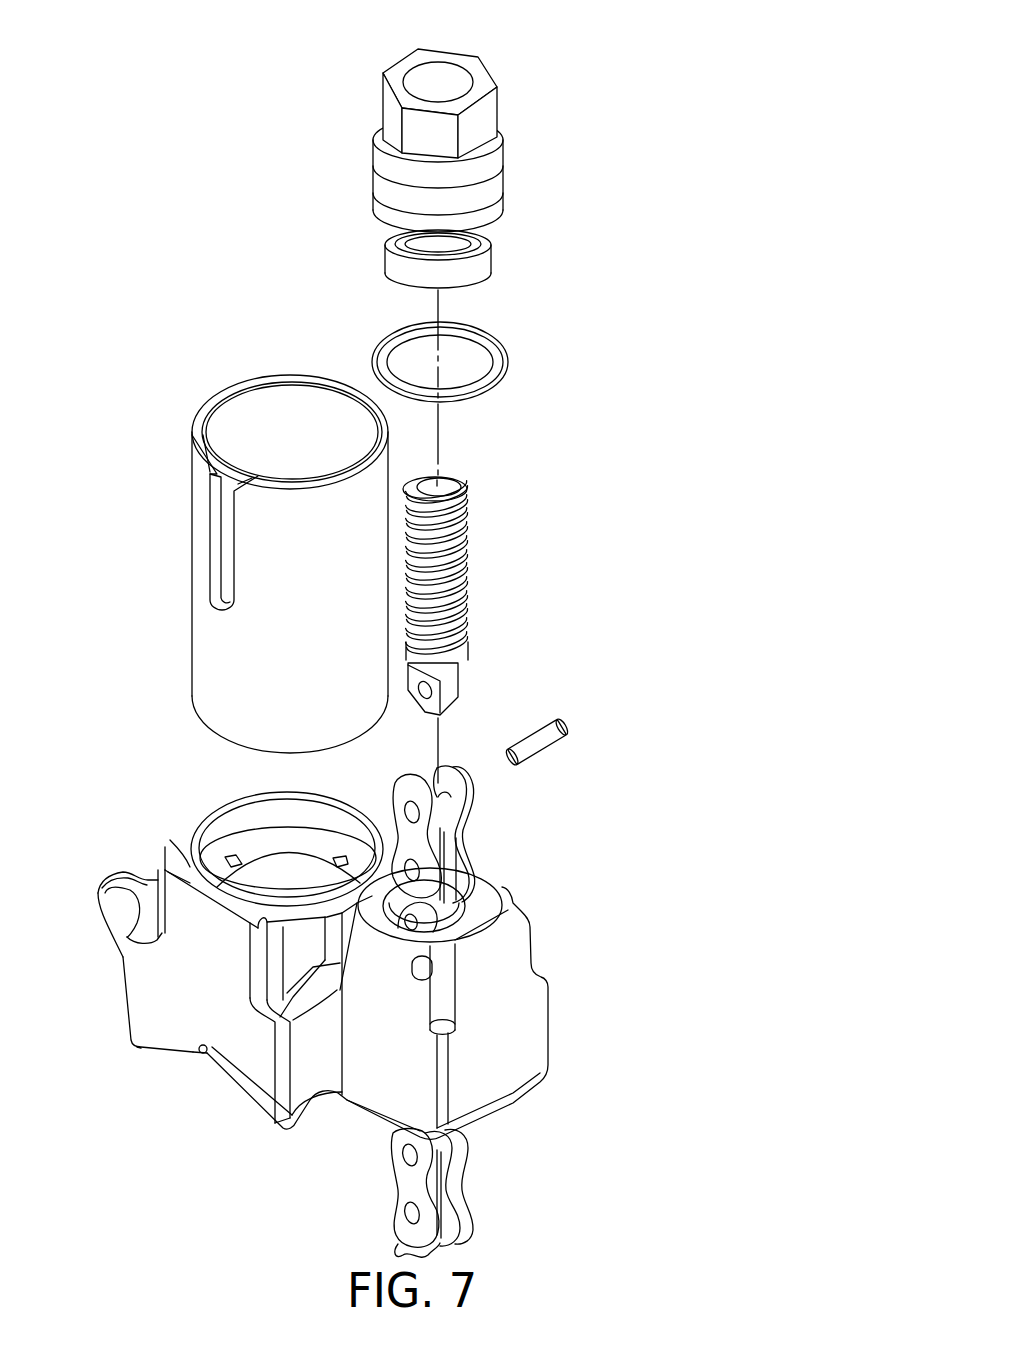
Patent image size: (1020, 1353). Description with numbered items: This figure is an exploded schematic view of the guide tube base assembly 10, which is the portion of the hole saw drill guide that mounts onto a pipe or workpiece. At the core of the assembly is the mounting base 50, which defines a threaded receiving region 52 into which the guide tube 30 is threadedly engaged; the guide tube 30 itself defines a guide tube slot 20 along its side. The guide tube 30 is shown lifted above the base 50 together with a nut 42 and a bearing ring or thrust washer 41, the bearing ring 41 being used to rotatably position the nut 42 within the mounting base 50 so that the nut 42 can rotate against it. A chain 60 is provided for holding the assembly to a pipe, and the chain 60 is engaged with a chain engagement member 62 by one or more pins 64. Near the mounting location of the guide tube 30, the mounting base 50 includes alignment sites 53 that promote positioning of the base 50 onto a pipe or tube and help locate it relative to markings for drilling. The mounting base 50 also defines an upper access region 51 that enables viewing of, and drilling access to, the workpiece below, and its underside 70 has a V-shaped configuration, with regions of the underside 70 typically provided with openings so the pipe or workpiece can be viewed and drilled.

The guide tube base assembly 10 is at (752, 207).
The guide tube slot 20 is at (222, 573).
The guide tube 30 is at (192, 503).
The bearing ring 41 is at (503, 347).
The nut 42 is at (487, 107).
The mounting base 50 is at (520, 1048).
The upper access region 51 is at (162, 867).
The threaded receiving region 52 is at (250, 818).
The alignment sites 53 is at (225, 858).
The chain 60 is at (472, 800).
The chain engagement member 62 is at (462, 567).
The pins 64 is at (555, 744).
The underside 70 is at (235, 1078).